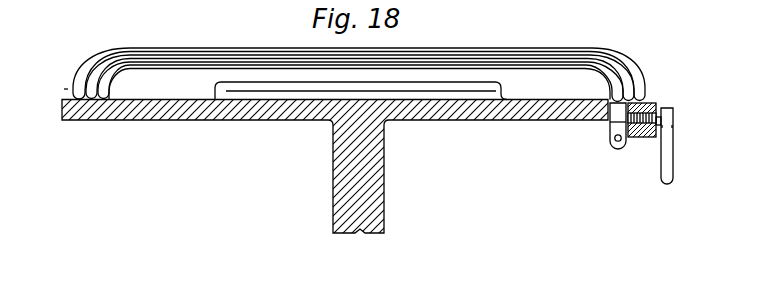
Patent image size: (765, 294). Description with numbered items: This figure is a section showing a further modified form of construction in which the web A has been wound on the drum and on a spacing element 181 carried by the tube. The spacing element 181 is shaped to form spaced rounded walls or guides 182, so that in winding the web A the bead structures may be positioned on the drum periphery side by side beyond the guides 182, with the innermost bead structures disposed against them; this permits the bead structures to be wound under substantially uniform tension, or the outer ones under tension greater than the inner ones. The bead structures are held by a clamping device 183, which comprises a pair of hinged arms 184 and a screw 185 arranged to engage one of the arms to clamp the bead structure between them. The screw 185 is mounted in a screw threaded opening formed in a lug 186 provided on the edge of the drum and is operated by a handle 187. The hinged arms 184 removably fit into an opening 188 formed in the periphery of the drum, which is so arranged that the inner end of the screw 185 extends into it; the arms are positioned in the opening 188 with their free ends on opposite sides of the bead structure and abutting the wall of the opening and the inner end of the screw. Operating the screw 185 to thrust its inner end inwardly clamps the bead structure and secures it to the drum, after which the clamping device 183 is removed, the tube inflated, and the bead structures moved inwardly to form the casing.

The web A is at (234, 50).
The spacing element 181 is at (361, 83).
The guides 182 is at (359, 85).
The clamping device 183 is at (655, 138).
The hinged arms 184 is at (624, 146).
The screw 185 is at (646, 107).
The lug 186 is at (659, 128).
The handle 187 is at (673, 167).
The opening 188 is at (583, 121).